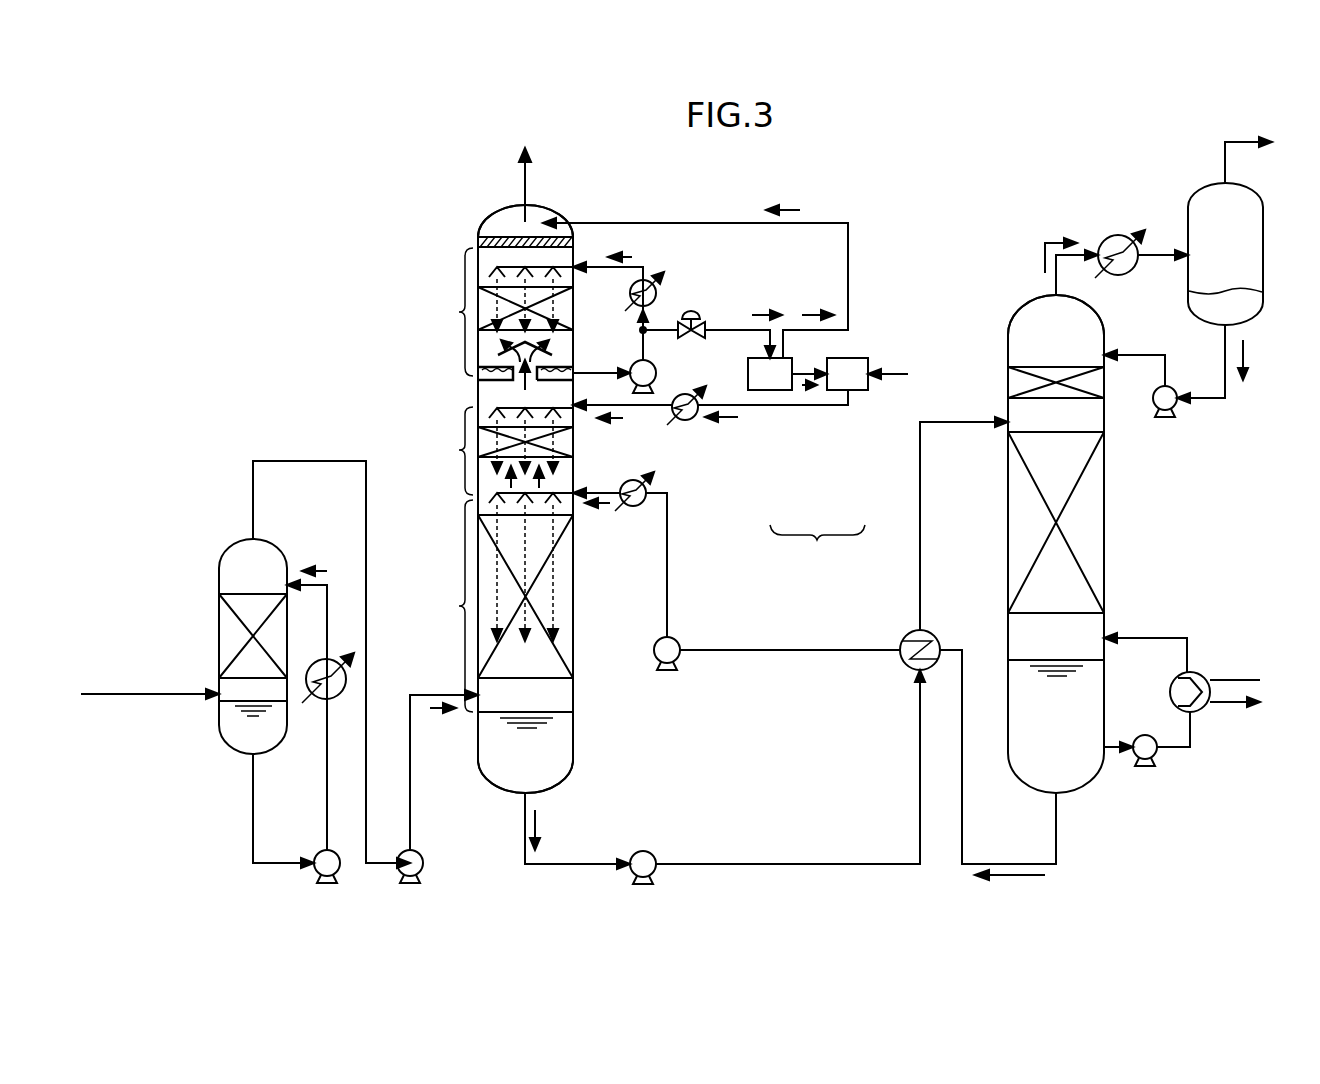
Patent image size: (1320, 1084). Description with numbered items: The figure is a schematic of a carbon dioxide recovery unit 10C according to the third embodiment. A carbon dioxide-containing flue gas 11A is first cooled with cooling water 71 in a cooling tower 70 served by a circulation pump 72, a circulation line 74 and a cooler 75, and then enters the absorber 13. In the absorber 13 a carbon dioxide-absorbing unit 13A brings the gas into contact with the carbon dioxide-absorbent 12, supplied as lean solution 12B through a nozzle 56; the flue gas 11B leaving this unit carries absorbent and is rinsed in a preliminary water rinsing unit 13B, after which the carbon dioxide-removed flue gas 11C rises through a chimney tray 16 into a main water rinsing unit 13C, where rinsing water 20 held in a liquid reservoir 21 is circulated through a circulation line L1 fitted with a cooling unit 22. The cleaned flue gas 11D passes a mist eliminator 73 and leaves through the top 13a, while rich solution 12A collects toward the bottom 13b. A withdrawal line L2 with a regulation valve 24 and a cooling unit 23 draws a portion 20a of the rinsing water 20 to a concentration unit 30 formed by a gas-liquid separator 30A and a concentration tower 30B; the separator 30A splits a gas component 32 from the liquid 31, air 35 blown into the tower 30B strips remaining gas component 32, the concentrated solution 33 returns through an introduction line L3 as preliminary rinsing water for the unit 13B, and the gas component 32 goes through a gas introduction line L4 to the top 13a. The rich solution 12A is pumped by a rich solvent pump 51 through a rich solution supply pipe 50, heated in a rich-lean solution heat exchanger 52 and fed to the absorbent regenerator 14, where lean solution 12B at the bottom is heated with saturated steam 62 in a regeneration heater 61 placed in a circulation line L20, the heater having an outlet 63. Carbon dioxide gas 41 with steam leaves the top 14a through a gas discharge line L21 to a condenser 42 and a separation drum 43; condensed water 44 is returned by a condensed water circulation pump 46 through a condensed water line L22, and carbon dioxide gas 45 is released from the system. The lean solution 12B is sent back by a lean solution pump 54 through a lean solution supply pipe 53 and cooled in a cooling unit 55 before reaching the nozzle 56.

The CO2 recovery unit 10C is at (876, 152).
The CO2-containing flue gas 11A is at (137, 697).
The flue gas 11B is at (508, 483).
The CO2-removed flue gas 11C is at (522, 388).
The flue gas 11D is at (521, 182).
The CO2-absorbent 12 is at (600, 506).
The rich solution 12A is at (538, 822).
The lean solution 12B is at (1020, 875).
The CO2 absorber 13 is at (460, 238).
The top 13a is at (541, 208).
The bottom 13b is at (578, 771).
The CO2-absorbing unit 13A is at (459, 606).
The preliminary water rinsing unit 13B is at (459, 450).
The main water rinsing unit 13C is at (459, 312).
The absorbent regenerator 14 is at (1120, 517).
The top 14a is at (1019, 299).
The chimney tray 16 is at (508, 350).
The rinsing water 20 is at (612, 252).
The portion of rinsing water 20a is at (614, 424).
The liquid reservoir 21 is at (546, 368).
The cooling unit 22 is at (657, 290).
The cooling unit 23 is at (689, 393).
The regulation valve 24 is at (694, 316).
The concentration unit 30 is at (808, 461).
The gas-liquid separator 30A is at (783, 392).
The concentration tower 30B is at (840, 392).
The liquid 31 is at (803, 391).
The gas component 32 is at (786, 211).
The concentrated solution 33 is at (733, 421).
The air 35 is at (908, 374).
The CO2 gas 41 is at (1045, 240).
The condenser 42 is at (1115, 236).
The separation drum 43 is at (1263, 251).
The condensed water 44 is at (1249, 359).
The CO2 gas 45 is at (1240, 142).
The condensed water circulation pump 46 is at (1176, 389).
The rich solution supply pipe 50 is at (597, 866).
The rich solvent pump 51 is at (629, 878).
The rich-lean solution heat exchanger 52 is at (905, 667).
The lean solution supply pipe 53 is at (960, 822).
The lean solution pump 54 is at (678, 641).
The cooling unit 55 is at (645, 484).
The nozzle 56 is at (560, 496).
The regeneration heater 61 is at (1195, 672).
The saturated steam 62 is at (1240, 680).
The heating medium discharge line 63 is at (1243, 703).
The cooling tower 70 is at (206, 543).
The cooling water 71 is at (301, 563).
The circulation pump 72 is at (314, 873).
The mist eliminator 73 is at (505, 236).
The circulation line 74 is at (252, 849).
The cooler 75 is at (298, 698).
The circulation line L1 is at (648, 270).
The withdrawal line L2 is at (715, 330).
The introduction line L3 is at (852, 396).
The gas introduction line L4 is at (848, 223).
The circulation line L20 is at (1147, 638).
The gas discharge line L21 is at (1160, 254).
The condensed water line L22 is at (1205, 399).